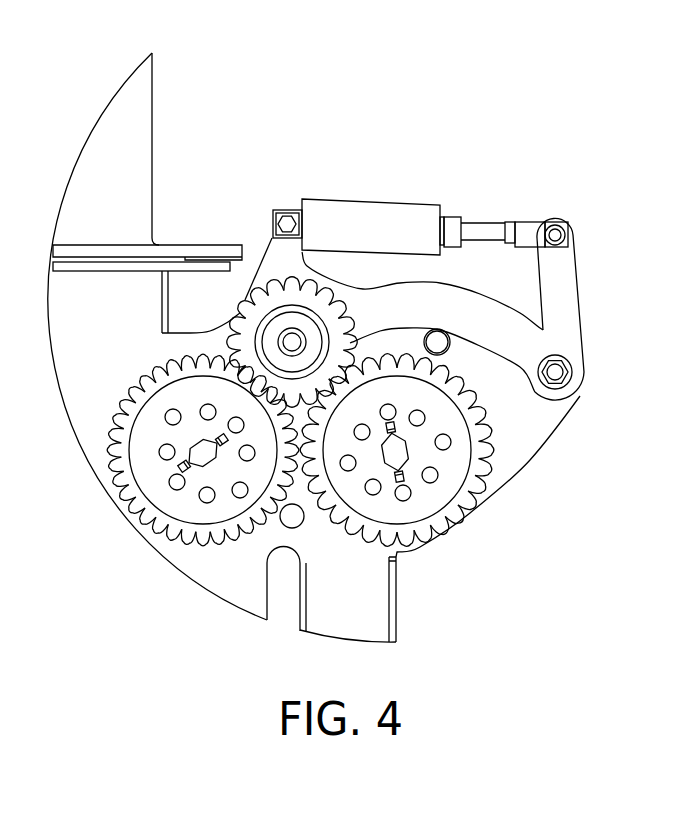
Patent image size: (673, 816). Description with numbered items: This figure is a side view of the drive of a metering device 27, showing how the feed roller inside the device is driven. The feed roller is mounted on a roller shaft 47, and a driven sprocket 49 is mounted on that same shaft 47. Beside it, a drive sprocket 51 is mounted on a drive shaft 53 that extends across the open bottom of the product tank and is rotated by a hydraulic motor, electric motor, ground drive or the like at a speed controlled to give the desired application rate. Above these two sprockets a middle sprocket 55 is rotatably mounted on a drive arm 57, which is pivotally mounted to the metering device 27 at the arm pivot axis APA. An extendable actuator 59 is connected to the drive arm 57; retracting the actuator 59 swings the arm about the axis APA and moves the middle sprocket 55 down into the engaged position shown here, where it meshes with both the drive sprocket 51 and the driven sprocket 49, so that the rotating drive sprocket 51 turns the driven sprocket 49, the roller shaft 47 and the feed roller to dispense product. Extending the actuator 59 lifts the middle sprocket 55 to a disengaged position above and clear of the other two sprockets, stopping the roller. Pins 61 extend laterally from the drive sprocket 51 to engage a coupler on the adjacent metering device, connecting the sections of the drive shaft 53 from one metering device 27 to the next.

The metering device 27 is at (223, 616).
The roller shaft 47 is at (190, 447).
The driven sprocket 49 is at (212, 550).
The drive sprocket 51 is at (488, 438).
The drive shaft 53 is at (380, 478).
The middle sprocket 55 is at (318, 287).
The drive arm 57 is at (455, 287).
The extendable actuator 59 is at (409, 199).
The pins 61 is at (413, 463).
The arm pivot axis APA is at (555, 372).